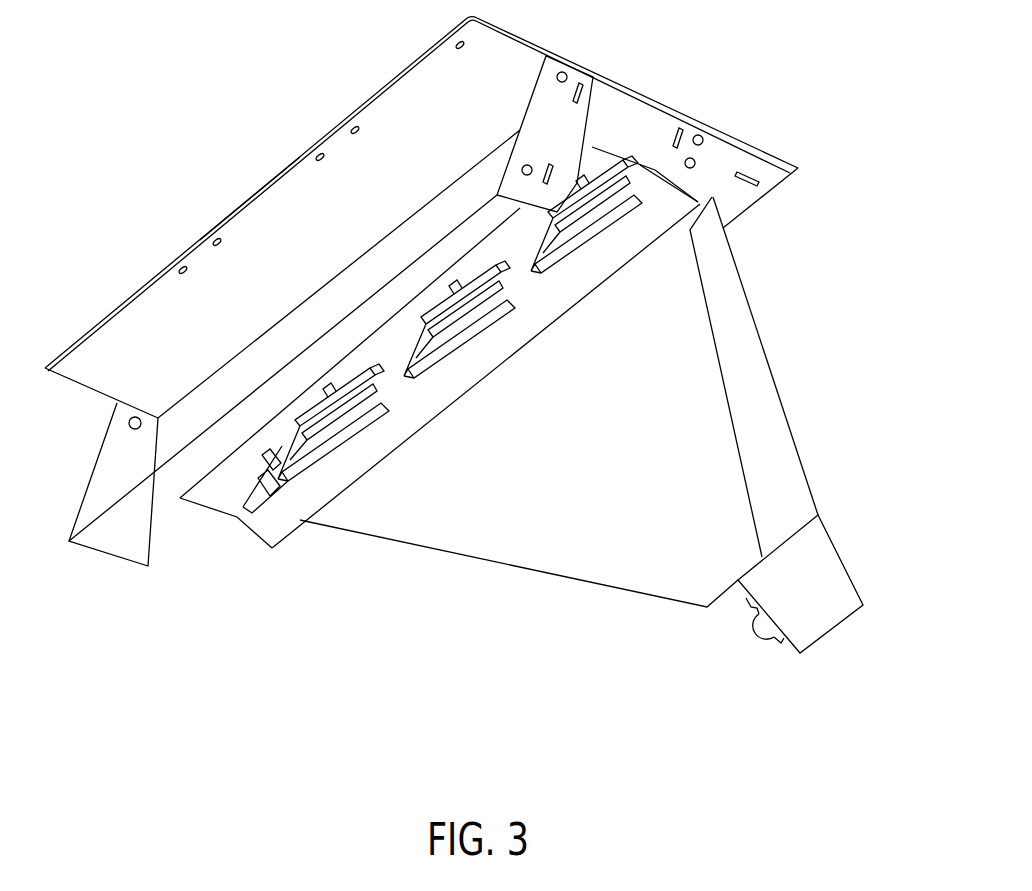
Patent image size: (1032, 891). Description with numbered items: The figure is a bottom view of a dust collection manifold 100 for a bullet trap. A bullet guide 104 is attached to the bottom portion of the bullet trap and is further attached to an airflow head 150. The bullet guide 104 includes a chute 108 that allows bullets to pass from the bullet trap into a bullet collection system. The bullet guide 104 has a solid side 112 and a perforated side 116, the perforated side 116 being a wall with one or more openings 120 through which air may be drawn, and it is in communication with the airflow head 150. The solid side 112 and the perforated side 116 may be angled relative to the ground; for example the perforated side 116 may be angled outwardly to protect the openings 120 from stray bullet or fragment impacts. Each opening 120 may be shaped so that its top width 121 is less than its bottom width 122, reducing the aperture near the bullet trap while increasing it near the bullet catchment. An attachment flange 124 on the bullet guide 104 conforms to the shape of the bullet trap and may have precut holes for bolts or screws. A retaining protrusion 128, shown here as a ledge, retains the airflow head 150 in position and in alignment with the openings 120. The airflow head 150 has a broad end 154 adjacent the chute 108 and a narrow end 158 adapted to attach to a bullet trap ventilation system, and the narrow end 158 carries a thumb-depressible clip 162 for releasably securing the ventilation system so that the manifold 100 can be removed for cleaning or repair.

The dust collection manifold 100 is at (154, 119).
The bullet guide 104 is at (627, 112).
The chute 108 is at (280, 423).
The solid side 112 is at (297, 337).
The perforated side 116 is at (390, 330).
The openings 120 is at (598, 217).
The top width 121 is at (572, 210).
The bottom width 122 is at (597, 290).
The attachment flange 124 is at (297, 183).
The retaining protrusion 128 is at (653, 217).
The airflow head 150 is at (573, 556).
The broad end 154 is at (715, 253).
The narrow end 158 is at (828, 588).
The thumb-depressible clip 162 is at (771, 640).